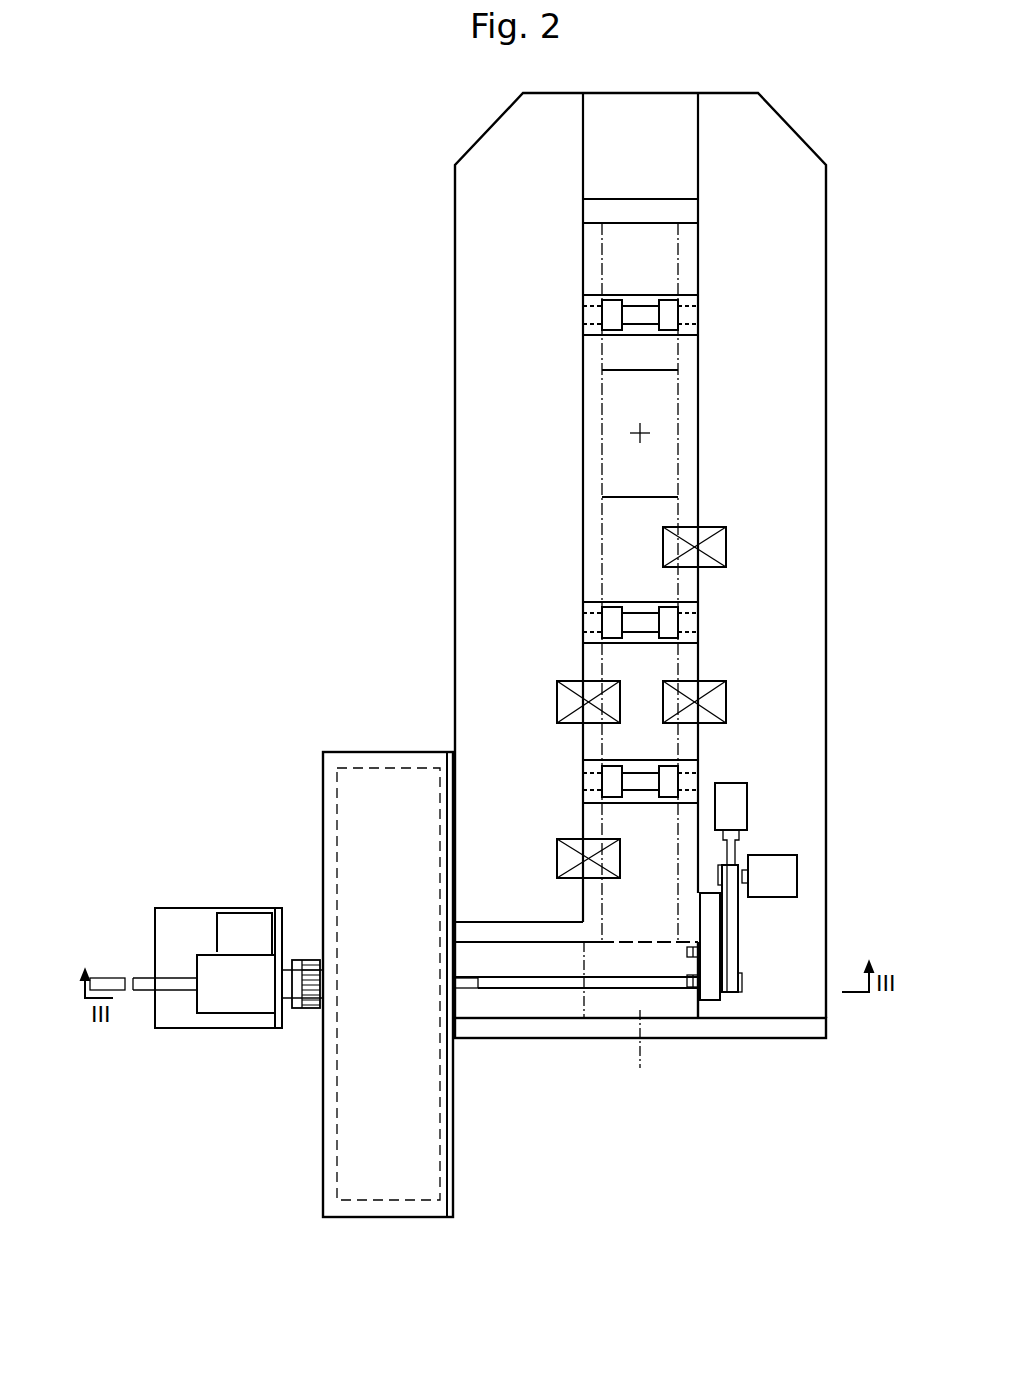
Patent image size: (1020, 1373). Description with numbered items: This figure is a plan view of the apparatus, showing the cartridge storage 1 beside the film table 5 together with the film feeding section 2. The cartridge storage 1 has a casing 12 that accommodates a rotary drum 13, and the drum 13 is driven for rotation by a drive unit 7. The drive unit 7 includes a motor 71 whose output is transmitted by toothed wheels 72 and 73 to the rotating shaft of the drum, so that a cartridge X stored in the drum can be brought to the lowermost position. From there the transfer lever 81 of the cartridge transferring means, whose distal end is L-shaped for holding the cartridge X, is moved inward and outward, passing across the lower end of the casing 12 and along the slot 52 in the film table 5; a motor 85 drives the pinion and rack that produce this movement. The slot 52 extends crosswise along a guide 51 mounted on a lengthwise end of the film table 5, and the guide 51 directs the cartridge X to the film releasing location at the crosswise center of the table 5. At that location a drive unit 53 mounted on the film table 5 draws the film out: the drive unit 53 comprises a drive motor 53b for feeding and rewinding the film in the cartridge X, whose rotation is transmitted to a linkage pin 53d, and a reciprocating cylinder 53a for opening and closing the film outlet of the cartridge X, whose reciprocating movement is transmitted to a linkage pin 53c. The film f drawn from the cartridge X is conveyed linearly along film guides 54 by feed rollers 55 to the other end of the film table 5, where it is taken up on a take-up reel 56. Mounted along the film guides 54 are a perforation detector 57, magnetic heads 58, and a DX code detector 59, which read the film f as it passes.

The cartridge storage 1 is at (318, 778).
The film feeding device 2 is at (438, 347).
The film table 5 is at (463, 402).
The drive unit 7 is at (238, 894).
The casing 12 is at (323, 808).
The rotary drum 13 is at (337, 843).
The guide 51 is at (600, 1030).
The slot 52 is at (552, 986).
The drive unit 53 is at (771, 825).
The reciprocating cylinder 53a is at (740, 795).
The drive motor 53b is at (790, 877).
The linkage pin 53c is at (688, 951).
The linkage pin 53d is at (686, 990).
The film guides 54 is at (688, 480).
The feed rollers 55 is at (640, 310).
The take-up reel 56 is at (635, 140).
The perforation detector 57 is at (557, 858).
The magnetic heads 58 is at (557, 695).
The DX code detector 59 is at (712, 527).
The motor 71 is at (247, 1003).
The toothed wheel 72 is at (298, 1010).
The toothed wheel 73 is at (305, 958).
The transfer lever 81 is at (468, 989).
The motor 85 is at (230, 940).
The film f is at (610, 555).
The cartridge X is at (644, 1084).